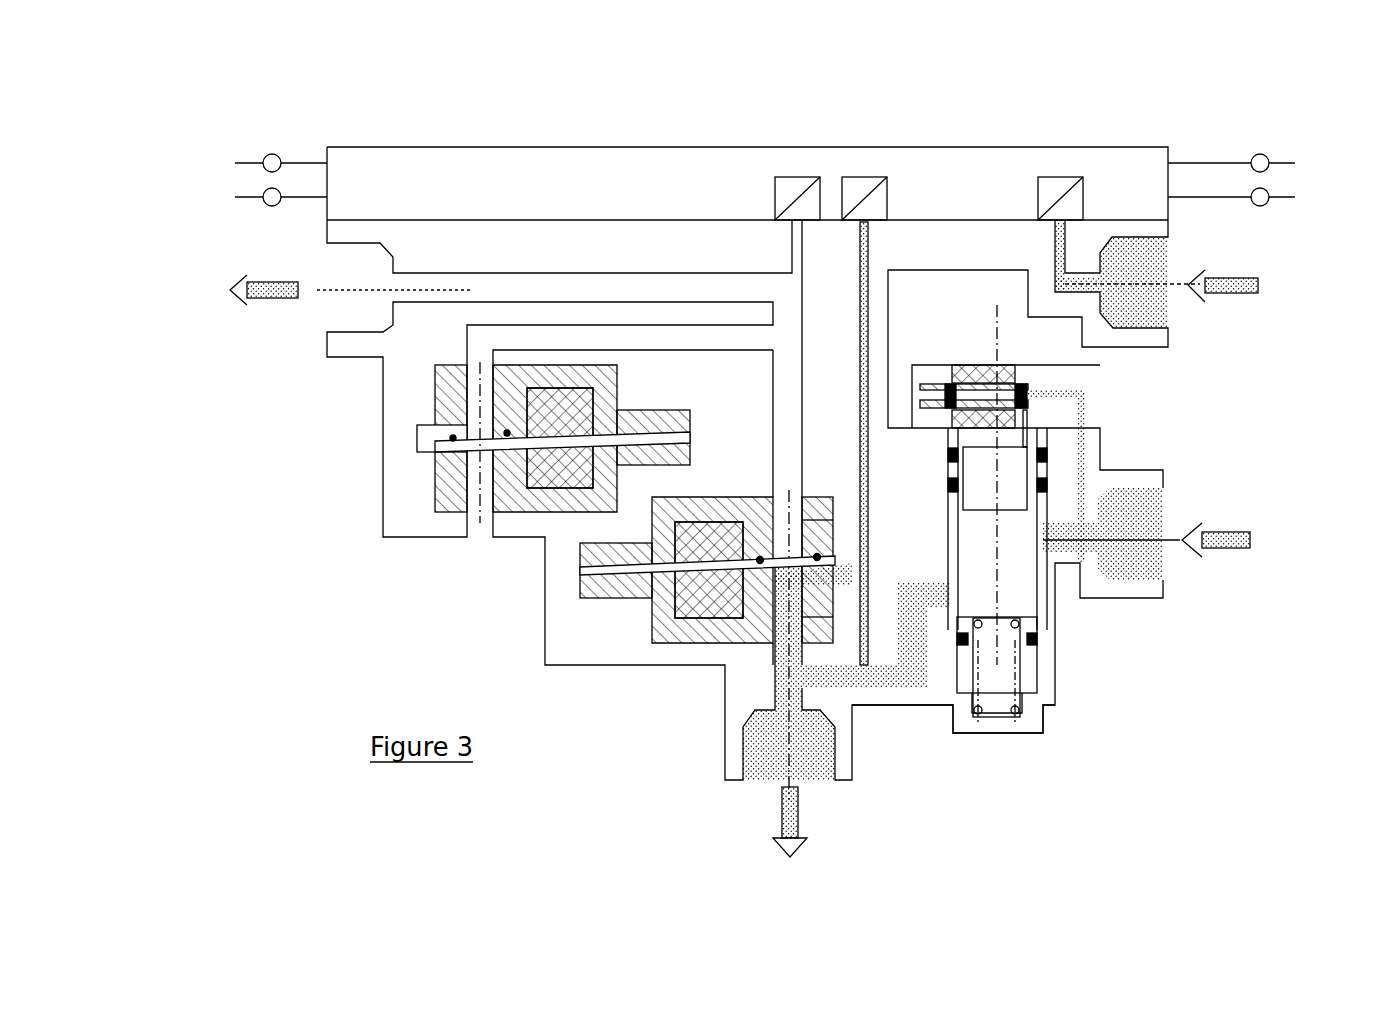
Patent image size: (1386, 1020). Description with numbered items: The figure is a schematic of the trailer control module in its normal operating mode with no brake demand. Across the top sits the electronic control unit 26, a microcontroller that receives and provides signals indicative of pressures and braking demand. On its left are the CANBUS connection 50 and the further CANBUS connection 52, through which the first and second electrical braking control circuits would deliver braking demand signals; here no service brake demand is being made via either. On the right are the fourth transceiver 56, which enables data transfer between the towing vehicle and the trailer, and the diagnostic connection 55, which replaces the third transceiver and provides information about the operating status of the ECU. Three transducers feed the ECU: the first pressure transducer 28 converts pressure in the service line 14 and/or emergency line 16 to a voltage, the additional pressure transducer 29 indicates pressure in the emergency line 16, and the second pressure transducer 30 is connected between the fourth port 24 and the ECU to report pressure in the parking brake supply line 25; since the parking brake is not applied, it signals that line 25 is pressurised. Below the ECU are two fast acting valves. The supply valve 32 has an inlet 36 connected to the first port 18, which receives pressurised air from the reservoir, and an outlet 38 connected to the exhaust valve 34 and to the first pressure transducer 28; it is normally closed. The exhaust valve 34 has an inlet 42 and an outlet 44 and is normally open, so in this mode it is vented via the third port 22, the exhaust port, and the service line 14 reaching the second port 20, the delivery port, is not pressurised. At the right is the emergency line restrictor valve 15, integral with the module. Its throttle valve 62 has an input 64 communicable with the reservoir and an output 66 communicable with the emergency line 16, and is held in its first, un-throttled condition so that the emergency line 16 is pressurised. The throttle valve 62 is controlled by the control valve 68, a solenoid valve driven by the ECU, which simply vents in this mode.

The service line 14 is at (490, 290).
The emergency line restrictor (ELR) valve 15 is at (1068, 635).
The emergency line 16 is at (822, 782).
The first port 18 is at (1160, 500).
The second port 20 is at (345, 306).
The third port 22 is at (480, 520).
The fourth port 24 is at (1160, 306).
The parking brake supply line 25 is at (1068, 284).
The electronic control unit (ECU) 26 is at (725, 185).
The first pressure transducer 28 is at (775, 196).
The additional pressure transducer 29 is at (888, 200).
The second pressure transducer 30 is at (1083, 200).
The supply valve 32 is at (670, 632).
The exhaust valve 34 is at (522, 505).
The inlet 36 is at (780, 648).
The outlet 38 is at (790, 490).
The inlet 42 is at (480, 343).
The outlet 44 is at (470, 498).
The CANBUS connection 50 is at (271, 152).
The further CANBUS connection 52 is at (271, 207).
The diagnostic connection 55 is at (1262, 207).
The fourth transceiver 56 is at (1262, 154).
The throttle valve 62 is at (1048, 675).
The input 64 is at (1062, 563).
The output 66 is at (943, 607).
The control valve 68 is at (968, 366).